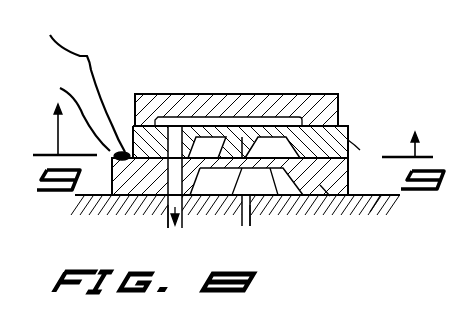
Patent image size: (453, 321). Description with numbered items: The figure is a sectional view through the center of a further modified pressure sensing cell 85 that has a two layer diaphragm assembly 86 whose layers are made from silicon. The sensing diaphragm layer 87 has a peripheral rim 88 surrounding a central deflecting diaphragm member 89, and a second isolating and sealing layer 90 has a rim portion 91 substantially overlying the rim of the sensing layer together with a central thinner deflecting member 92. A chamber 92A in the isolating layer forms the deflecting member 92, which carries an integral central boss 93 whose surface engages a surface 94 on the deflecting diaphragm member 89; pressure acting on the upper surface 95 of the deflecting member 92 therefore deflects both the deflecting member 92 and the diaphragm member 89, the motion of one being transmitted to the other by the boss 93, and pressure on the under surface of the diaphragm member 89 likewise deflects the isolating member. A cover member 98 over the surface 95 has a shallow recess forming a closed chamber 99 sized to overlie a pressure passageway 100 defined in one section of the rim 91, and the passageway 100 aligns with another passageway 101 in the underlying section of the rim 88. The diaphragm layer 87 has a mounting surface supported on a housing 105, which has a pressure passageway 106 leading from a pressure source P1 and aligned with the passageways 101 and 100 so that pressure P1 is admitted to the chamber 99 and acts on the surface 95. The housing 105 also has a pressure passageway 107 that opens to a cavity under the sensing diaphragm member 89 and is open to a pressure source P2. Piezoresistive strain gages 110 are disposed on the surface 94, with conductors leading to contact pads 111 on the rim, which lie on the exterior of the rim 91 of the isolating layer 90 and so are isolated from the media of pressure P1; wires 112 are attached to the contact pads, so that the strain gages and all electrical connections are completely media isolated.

The pressure sensing cell 85 is at (312, 94).
The two layer diaphragm assembly 86 is at (354, 121).
The sensing diaphragm layer 87 is at (377, 197).
The peripheral rim 88 is at (322, 185).
The central deflecting diaphragm member 89 is at (268, 201).
The isolating and sealing layer 90 is at (352, 131).
The rim portion 91 is at (120, 153).
The deflecting member 92 is at (268, 134).
The chamber 92A is at (338, 98).
The central boss 93 is at (198, 200).
The surface 94 is at (347, 101).
The upper surface 95 is at (222, 136).
The cover member 98 is at (289, 107).
The closed chamber 99 is at (175, 125).
The pressure passageway 100 is at (98, 217).
The passageway 101 is at (140, 200).
The housing 105 is at (391, 212).
The pressure passageway 106 is at (167, 212).
The pressure passageway 107 is at (252, 226).
The piezoresistive strain gages 110 is at (244, 117).
The contact pads 111 is at (75, 112).
The wires 112 is at (82, 80).
The pressure source P1 is at (177, 191).
The pressure source P2 is at (249, 225).